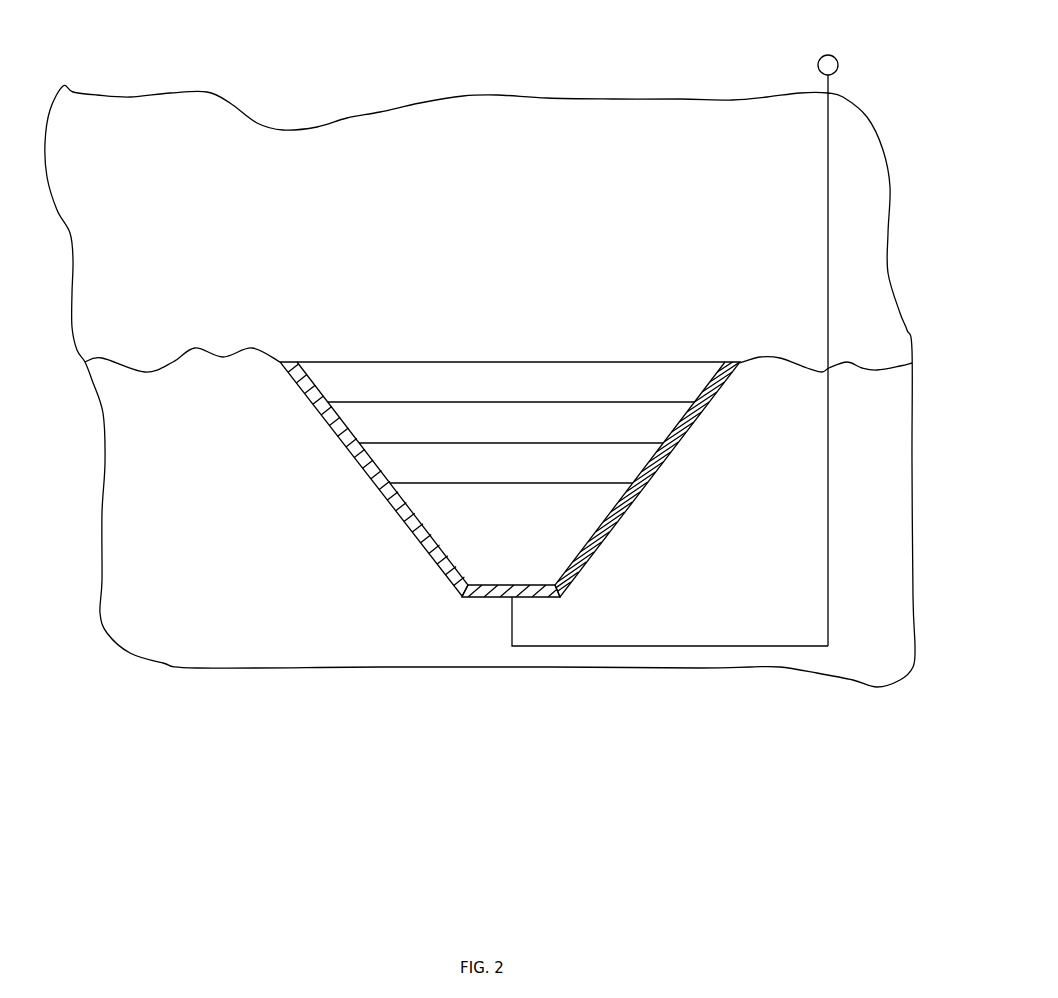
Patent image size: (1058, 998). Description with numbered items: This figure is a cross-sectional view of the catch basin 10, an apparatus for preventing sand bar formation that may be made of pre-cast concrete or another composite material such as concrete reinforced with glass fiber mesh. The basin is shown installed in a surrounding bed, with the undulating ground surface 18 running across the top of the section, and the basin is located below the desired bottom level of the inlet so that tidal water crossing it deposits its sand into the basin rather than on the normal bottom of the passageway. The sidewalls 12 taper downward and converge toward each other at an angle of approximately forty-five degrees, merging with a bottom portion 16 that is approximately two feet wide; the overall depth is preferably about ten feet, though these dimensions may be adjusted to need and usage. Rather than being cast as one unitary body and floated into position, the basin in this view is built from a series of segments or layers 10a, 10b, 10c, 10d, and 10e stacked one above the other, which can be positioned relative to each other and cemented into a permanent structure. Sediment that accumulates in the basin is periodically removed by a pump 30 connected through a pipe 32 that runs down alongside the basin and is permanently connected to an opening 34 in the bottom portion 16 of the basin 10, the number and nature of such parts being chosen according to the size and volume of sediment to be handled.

The catch basin 10 is at (498, 95).
The layer of the catch basin 10a is at (511, 382).
The layer of the catch basin 10b is at (511, 428).
The layer of the catch basin 10c is at (511, 469).
The layer of the catch basin 10d is at (512, 504).
The layer of the catch basin 10e is at (568, 538).
The sidewalls 12 is at (402, 520).
The bottom portion 16 is at (527, 583).
The ground surface 18 is at (177, 357).
The pump 30 is at (835, 56).
The pipe 32 is at (828, 245).
The opening 34 is at (507, 594).